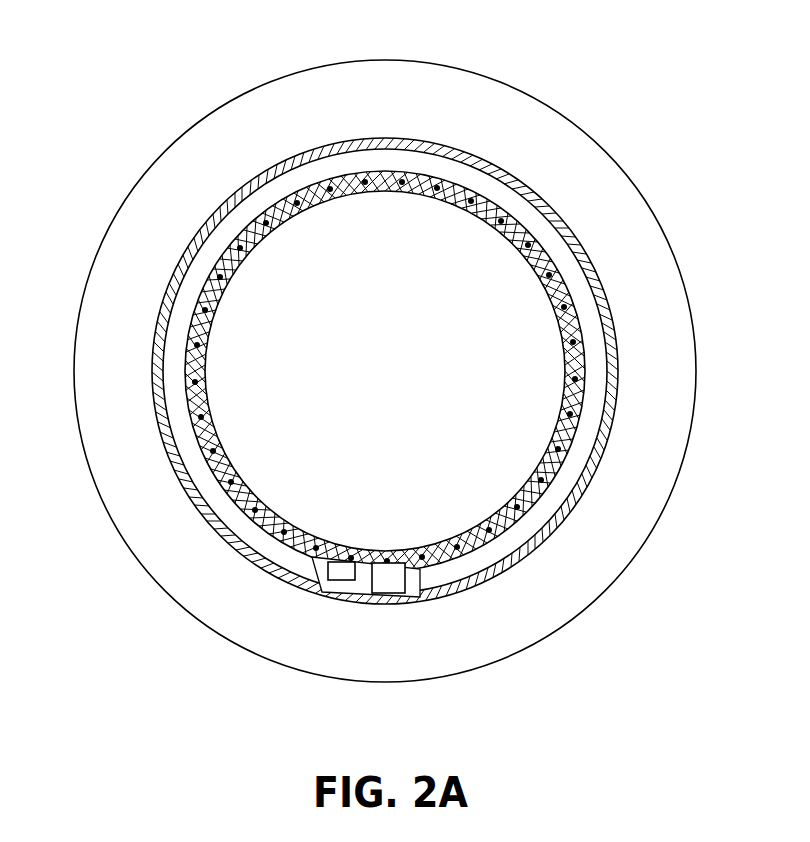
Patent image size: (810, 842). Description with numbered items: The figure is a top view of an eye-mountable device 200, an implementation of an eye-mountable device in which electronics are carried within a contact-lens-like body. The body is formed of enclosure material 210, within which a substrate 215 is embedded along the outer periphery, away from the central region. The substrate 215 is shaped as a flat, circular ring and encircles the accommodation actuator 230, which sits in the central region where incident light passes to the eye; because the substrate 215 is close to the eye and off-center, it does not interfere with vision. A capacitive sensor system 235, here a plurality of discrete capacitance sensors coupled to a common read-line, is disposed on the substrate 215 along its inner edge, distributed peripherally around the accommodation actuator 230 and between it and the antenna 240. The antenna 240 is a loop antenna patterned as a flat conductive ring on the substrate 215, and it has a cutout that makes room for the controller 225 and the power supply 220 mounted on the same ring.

The eye-mountable device 200 is at (172, 82).
The enclosure material 210 is at (108, 517).
The substrate 215 is at (573, 507).
The power supply 220 is at (335, 575).
The controller 225 is at (390, 592).
The accommodation actuator 230 is at (342, 328).
The capacitive sensor system 235 is at (190, 345).
The antenna 240 is at (507, 542).